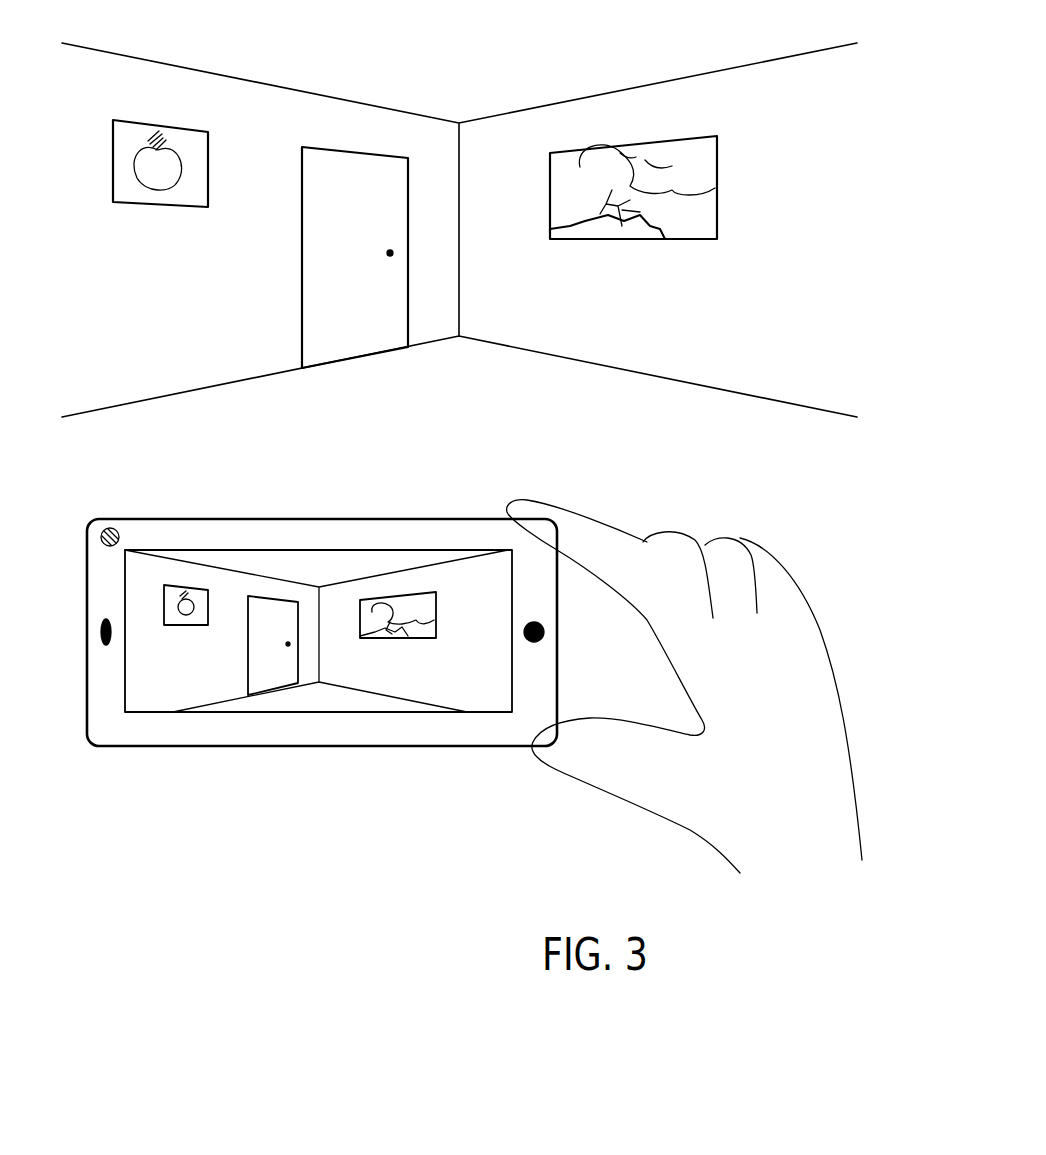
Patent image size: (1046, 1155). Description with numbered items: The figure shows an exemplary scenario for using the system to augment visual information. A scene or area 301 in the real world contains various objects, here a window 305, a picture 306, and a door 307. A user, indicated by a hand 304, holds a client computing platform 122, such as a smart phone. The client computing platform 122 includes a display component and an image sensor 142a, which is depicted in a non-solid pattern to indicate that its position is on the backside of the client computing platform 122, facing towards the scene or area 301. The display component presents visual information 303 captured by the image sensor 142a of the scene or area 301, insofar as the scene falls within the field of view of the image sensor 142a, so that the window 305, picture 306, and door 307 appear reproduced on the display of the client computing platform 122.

The scene or area 301 is at (645, 418).
The window 305 is at (698, 258).
The picture 306 is at (183, 218).
The door 307 is at (347, 373).
The client computing platform 122 is at (116, 753).
The image sensor 142a is at (122, 530).
The visual information 303 is at (259, 720).
The hand 304 is at (603, 800).